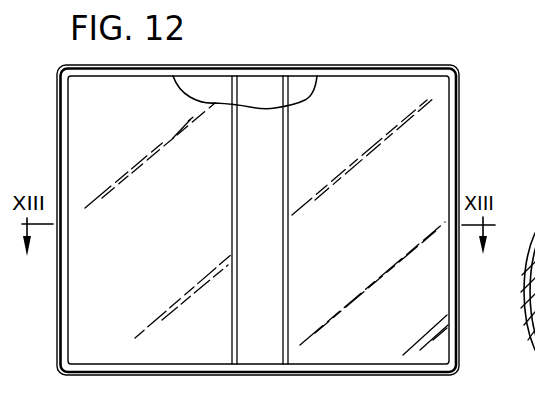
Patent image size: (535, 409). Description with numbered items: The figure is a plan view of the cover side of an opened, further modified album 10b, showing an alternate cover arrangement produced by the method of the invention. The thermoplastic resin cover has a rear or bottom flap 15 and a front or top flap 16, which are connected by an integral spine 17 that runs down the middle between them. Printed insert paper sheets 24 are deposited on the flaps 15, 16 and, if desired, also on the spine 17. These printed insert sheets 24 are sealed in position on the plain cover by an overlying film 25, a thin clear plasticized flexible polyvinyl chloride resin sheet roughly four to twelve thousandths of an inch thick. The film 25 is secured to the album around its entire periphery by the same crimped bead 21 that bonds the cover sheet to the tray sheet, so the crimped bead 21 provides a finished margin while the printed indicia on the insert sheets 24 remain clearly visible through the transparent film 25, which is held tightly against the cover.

The modified album 10b is at (412, 60).
The crimped bead peripheral edge 21 is at (460, 78).
The rear or bottom flap 15 is at (76, 138).
The front or top flap 16 is at (438, 149).
The spine 17 is at (272, 175).
The printed insert paper sheets 24 is at (300, 85).
The overlying film 25 is at (416, 188).